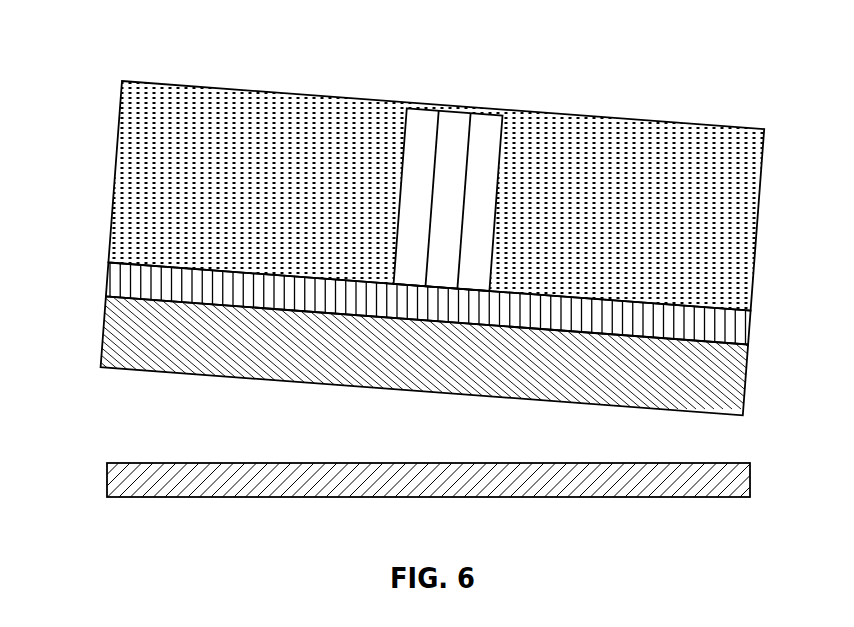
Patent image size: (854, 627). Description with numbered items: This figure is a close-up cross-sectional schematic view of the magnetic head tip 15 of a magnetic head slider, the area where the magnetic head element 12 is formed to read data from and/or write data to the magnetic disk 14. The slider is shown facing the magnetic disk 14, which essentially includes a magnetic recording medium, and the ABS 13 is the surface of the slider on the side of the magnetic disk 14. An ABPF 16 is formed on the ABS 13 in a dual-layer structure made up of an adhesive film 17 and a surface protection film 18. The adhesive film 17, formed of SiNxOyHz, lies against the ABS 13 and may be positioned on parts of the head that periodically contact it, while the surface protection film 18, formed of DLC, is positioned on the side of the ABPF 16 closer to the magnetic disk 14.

The magnetic head element 12 is at (508, 100).
The ABS 13 is at (707, 310).
The magnetic disk 14 is at (404, 467).
The magnetic head tip 15 is at (427, 217).
The ABPF 16 is at (427, 335).
The adhesive film 17 is at (742, 330).
The surface protection film 18 is at (737, 375).